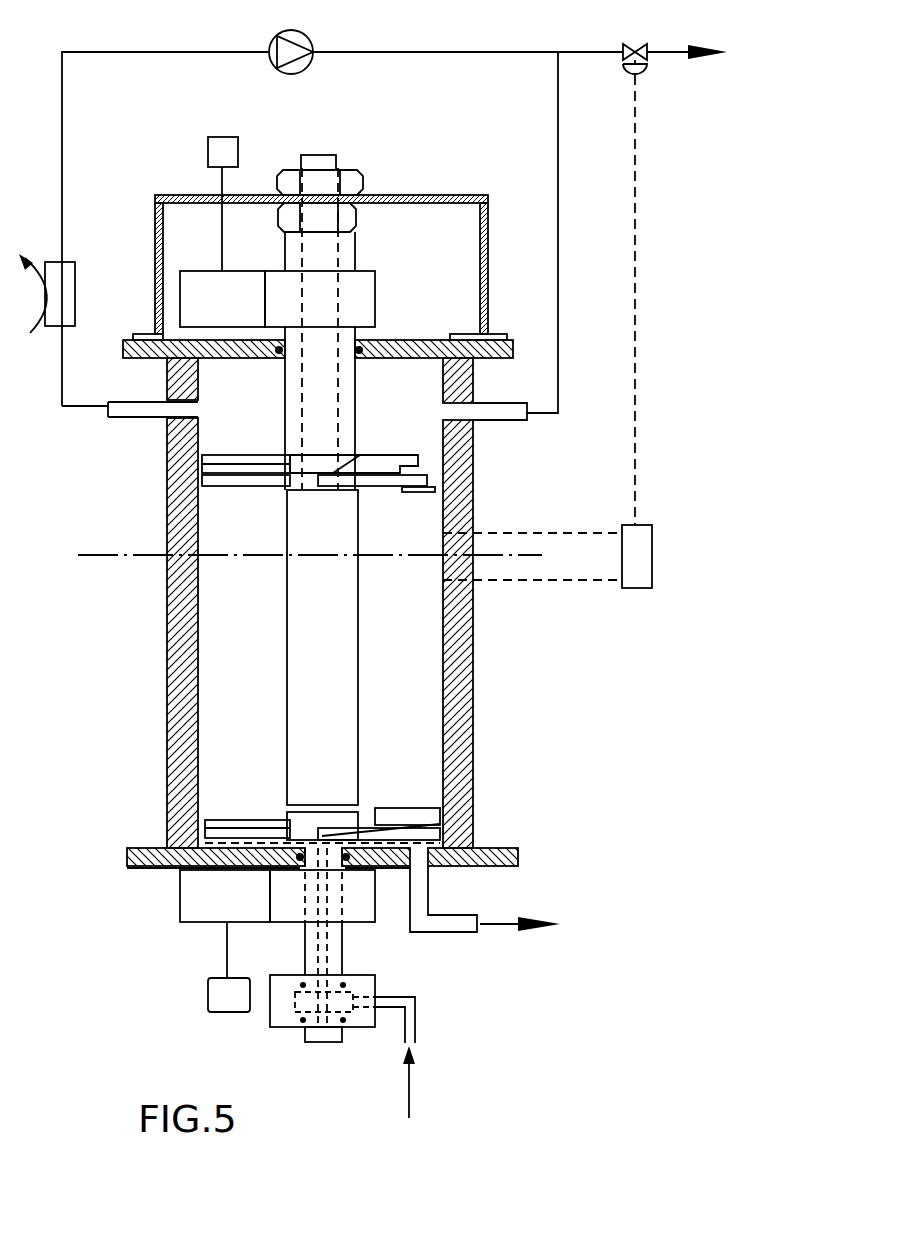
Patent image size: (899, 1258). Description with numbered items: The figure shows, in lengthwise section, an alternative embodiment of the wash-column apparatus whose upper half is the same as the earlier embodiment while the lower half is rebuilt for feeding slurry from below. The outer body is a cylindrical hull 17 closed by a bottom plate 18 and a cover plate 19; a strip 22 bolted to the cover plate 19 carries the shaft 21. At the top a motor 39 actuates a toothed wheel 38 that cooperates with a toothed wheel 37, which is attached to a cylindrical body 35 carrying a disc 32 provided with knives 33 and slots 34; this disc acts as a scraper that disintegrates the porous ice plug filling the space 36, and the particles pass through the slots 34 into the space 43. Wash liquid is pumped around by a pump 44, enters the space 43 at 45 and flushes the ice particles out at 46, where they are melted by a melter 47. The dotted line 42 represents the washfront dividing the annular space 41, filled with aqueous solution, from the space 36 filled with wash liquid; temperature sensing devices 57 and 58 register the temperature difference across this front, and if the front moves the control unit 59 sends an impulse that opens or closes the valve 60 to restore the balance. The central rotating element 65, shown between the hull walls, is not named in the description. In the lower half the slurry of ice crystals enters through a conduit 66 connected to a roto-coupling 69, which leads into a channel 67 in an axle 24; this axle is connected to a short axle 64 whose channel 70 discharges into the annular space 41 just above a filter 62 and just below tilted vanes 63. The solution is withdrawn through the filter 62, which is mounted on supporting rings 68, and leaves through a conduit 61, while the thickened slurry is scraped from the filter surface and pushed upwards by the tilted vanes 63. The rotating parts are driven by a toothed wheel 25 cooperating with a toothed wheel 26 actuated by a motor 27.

The cylindrical hull 17 is at (185, 603).
The bottom plate 18 is at (505, 858).
The cover plate 19 is at (505, 350).
The shaft 21 is at (333, 246).
The strip 22 is at (438, 195).
The axle 24 is at (380, 868).
The toothed wheel 25 is at (360, 903).
The toothed wheel 26 is at (207, 901).
The motor 27 is at (207, 987).
The disc 32 is at (398, 468).
The knives 33 is at (207, 478).
The slots 34 is at (290, 465).
The cylindrical body 35 is at (293, 368).
The space 36 is at (408, 511).
The toothed wheel 37 is at (365, 292).
The toothed wheel 38 is at (207, 283).
The motor 39 is at (207, 152).
The annular space 41 is at (415, 607).
The dotted line 42 is at (227, 555).
The space 43 is at (232, 392).
The pump 44 is at (293, 30).
The inlet 45 is at (527, 420).
The outlet 46 is at (117, 418).
The melter 47 is at (74, 288).
The temperature sensing device 57 is at (470, 535).
The temperature sensing device 58 is at (470, 575).
The control unit 59 is at (640, 588).
The valve 60 is at (628, 45).
The conduit 61 is at (450, 932).
The filter 62 is at (440, 835).
The tilted vanes 63 is at (375, 808).
The short axle 64 is at (339, 812).
The rotor 65 is at (300, 578).
The conduit 66 is at (415, 1012).
The channel 67 is at (375, 985).
The supporting rings 68 is at (242, 832).
The roto-coupling 69 is at (270, 1023).
The channel 70 is at (297, 805).